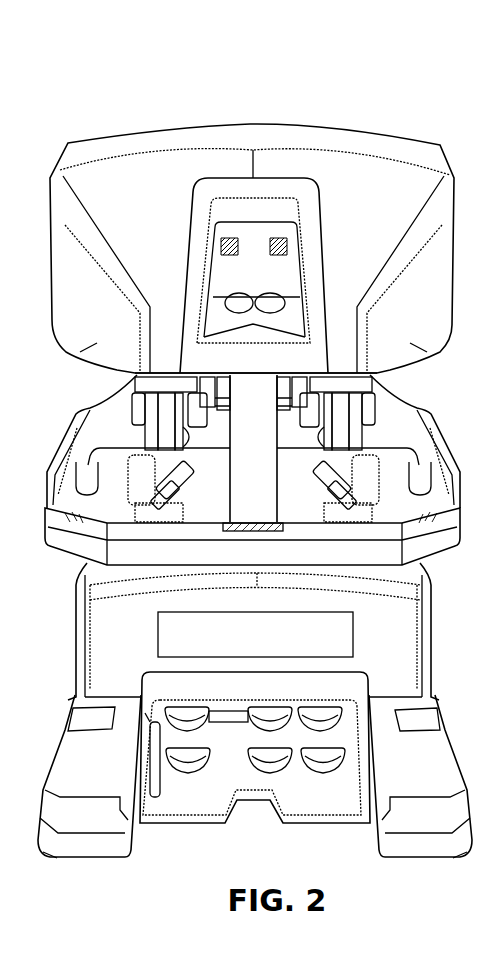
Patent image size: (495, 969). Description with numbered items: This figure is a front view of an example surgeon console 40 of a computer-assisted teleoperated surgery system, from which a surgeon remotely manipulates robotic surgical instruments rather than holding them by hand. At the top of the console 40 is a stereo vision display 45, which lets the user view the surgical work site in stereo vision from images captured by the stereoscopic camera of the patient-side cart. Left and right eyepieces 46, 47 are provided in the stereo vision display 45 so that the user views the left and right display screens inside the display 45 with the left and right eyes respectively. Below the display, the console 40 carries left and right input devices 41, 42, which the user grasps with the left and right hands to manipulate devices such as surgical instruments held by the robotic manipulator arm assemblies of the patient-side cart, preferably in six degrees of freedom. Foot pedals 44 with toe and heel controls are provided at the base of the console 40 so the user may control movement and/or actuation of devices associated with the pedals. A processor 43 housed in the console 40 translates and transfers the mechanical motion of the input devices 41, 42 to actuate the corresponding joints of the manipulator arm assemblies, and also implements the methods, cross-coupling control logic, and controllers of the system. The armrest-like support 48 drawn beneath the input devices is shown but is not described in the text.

The surgeon console 40 is at (419, 105).
The left input device 41 is at (188, 479).
The right input device 42 is at (319, 479).
The processor 43 is at (297, 613).
The foot pedals 44 is at (325, 752).
The stereo vision display 45 is at (215, 303).
The left eyepiece 46 is at (240, 296).
The right eyepiece 47 is at (262, 296).
The armrest 48 is at (417, 518).